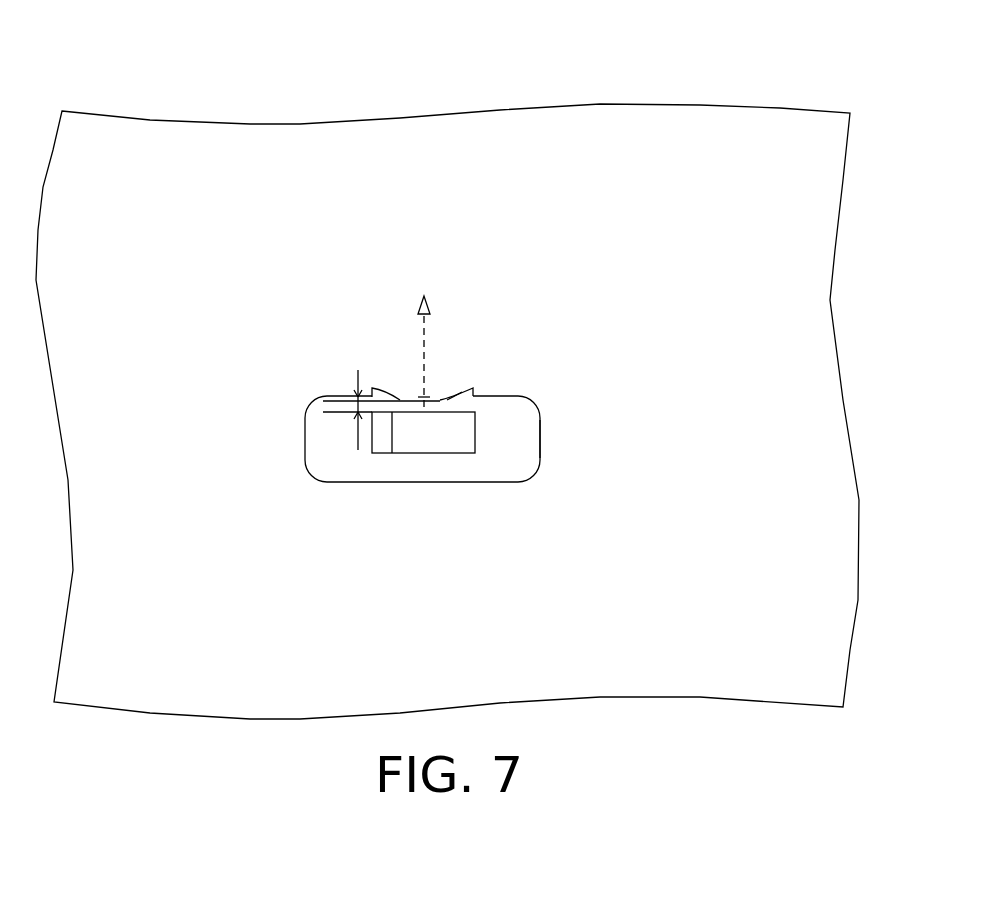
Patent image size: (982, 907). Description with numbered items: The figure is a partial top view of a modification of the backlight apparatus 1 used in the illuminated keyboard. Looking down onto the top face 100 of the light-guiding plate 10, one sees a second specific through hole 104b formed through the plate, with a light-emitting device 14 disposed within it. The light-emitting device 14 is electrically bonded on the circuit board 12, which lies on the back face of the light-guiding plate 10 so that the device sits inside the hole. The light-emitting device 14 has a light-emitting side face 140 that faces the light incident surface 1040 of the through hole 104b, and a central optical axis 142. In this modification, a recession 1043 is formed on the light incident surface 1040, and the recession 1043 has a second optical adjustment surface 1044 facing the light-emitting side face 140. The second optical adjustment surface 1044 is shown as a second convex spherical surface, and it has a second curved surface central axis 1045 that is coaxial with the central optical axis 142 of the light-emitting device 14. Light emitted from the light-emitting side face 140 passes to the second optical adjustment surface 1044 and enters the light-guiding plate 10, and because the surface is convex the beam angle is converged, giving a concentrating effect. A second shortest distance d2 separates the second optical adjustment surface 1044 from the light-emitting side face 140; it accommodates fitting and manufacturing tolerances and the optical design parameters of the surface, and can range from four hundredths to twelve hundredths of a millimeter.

The backlight apparatus 1 is at (448, 95).
The light-guiding plate 10 is at (693, 150).
The top face 100 is at (768, 565).
The circuit board 12 is at (498, 458).
The second specific through hole 104b is at (510, 432).
The light-emitting device 14 is at (432, 442).
The light-emitting side face 140 is at (392, 453).
The central optical axis 142 is at (422, 380).
The light incident surface 1040 is at (350, 394).
The recession 1043 is at (473, 388).
The second optical adjustment surface 1044 is at (450, 397).
The second curved surface central axis 1045 is at (420, 318).
The second shortest distance d2 is at (355, 440).